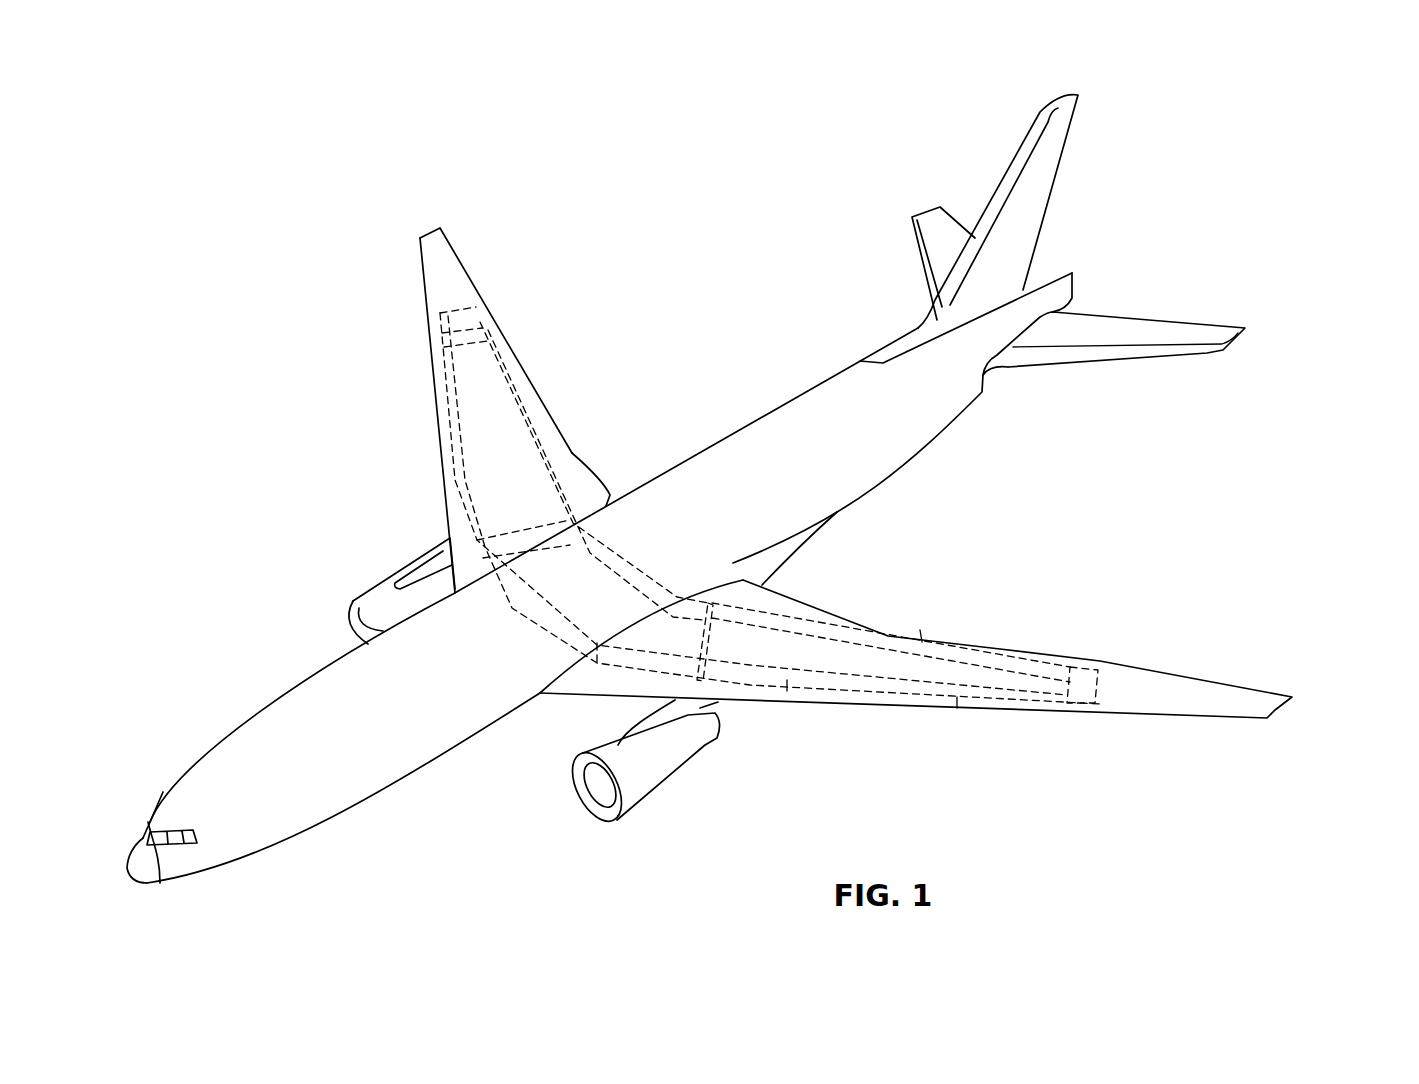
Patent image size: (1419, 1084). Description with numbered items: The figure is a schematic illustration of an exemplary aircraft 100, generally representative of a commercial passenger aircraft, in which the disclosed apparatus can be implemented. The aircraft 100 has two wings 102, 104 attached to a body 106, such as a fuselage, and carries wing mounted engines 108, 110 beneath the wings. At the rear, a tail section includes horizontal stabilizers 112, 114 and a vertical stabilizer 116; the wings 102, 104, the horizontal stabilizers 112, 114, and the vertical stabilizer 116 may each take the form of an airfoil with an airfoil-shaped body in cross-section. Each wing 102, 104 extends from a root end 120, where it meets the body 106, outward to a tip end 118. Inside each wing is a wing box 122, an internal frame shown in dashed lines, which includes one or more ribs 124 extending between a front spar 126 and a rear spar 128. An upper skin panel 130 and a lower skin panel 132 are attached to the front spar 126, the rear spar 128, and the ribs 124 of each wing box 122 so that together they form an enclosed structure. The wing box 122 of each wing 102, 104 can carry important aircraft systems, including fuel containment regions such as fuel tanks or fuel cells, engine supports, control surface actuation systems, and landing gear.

The aircraft 100 is at (305, 316).
The wing 102 is at (463, 263).
The wing 104 is at (1178, 677).
The body 106 is at (760, 418).
The wing mounted engine 108 is at (385, 570).
The wing mounted engine 110 is at (652, 803).
The horizontal stabilizer 112 is at (1147, 320).
The horizontal stabilizer 114 is at (913, 258).
The vertical stabilizer 116 is at (1003, 185).
The tip end 118 is at (435, 230).
The root end 120 is at (607, 503).
The wing box 122 is at (522, 381).
The rib 124 is at (488, 317).
The front spar 126 is at (445, 414).
The rear spar 128 is at (535, 421).
The upper skin panel 130 is at (440, 275).
The lower skin panel 132 is at (404, 327).